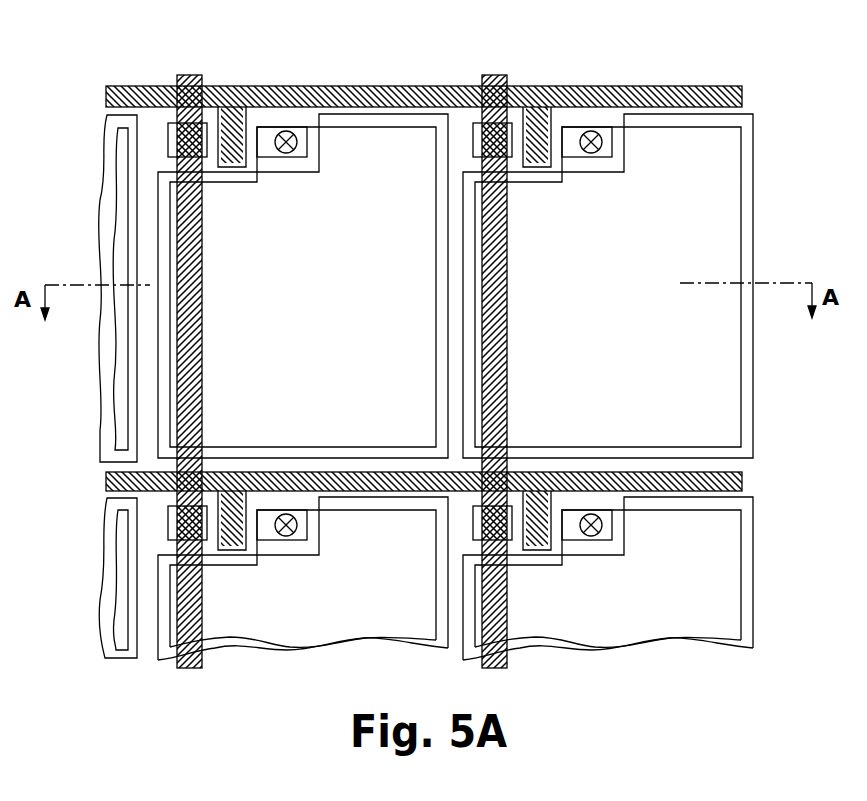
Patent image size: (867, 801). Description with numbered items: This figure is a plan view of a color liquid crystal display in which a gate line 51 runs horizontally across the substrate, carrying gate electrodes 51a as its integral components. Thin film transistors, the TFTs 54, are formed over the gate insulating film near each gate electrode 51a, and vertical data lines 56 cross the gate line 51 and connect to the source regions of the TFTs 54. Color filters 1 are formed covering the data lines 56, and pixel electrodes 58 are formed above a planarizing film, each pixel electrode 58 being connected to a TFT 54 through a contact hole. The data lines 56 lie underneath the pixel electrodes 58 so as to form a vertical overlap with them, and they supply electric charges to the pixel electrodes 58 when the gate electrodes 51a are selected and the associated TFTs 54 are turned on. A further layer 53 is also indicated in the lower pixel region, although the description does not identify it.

The color filter 1 is at (157, 375).
The gate line 51 is at (742, 96).
The gate electrode 51a is at (231, 87).
The insulating layer 53 is at (695, 620).
The TFT 54 is at (268, 80).
The data line 56 is at (195, 76).
The pixel electrode 58 is at (708, 354).